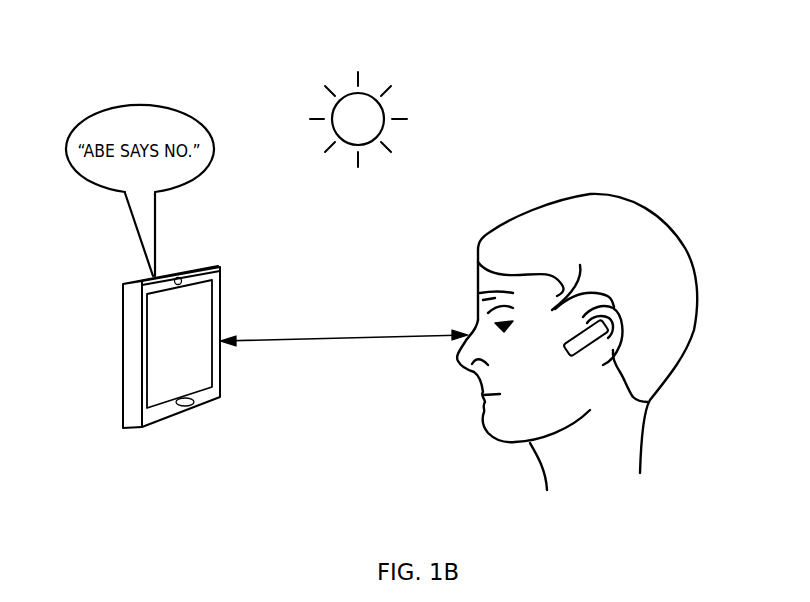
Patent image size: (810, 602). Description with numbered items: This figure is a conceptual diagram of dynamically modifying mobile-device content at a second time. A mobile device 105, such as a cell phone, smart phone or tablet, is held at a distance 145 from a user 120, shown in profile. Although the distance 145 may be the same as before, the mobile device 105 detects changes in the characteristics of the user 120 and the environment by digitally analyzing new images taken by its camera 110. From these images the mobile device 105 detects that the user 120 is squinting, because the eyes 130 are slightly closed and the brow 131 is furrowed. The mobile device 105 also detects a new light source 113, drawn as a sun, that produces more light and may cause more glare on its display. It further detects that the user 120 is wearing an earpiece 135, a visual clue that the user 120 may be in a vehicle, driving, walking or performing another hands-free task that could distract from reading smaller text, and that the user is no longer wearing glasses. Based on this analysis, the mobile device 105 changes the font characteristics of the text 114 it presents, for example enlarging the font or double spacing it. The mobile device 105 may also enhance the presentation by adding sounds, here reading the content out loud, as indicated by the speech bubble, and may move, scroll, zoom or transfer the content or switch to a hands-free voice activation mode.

The mobile device 105 is at (125, 328).
The camera 110 is at (187, 273).
The light source 113 is at (368, 94).
The text 114 is at (148, 325).
The user 120 is at (552, 316).
The eyes 130 is at (493, 325).
The brow 131 is at (487, 283).
The earpiece 135 is at (600, 350).
The distance 145 is at (335, 342).